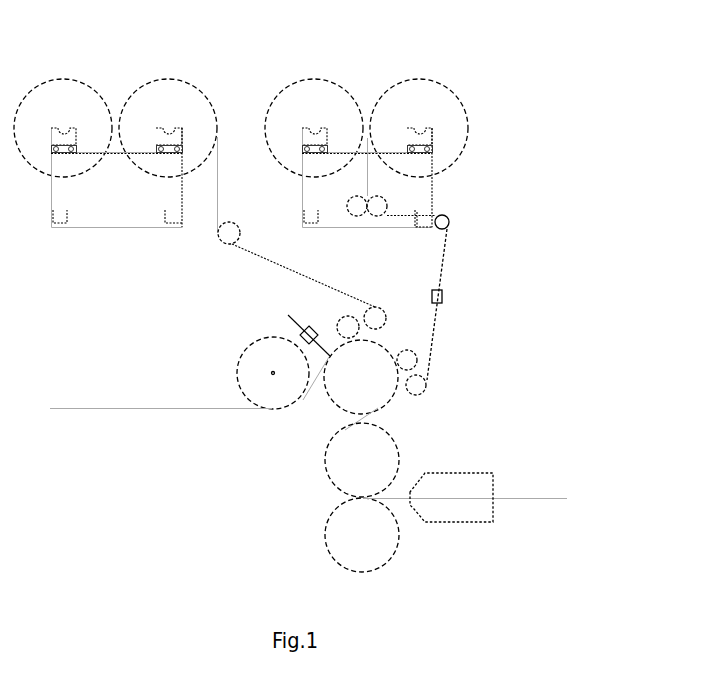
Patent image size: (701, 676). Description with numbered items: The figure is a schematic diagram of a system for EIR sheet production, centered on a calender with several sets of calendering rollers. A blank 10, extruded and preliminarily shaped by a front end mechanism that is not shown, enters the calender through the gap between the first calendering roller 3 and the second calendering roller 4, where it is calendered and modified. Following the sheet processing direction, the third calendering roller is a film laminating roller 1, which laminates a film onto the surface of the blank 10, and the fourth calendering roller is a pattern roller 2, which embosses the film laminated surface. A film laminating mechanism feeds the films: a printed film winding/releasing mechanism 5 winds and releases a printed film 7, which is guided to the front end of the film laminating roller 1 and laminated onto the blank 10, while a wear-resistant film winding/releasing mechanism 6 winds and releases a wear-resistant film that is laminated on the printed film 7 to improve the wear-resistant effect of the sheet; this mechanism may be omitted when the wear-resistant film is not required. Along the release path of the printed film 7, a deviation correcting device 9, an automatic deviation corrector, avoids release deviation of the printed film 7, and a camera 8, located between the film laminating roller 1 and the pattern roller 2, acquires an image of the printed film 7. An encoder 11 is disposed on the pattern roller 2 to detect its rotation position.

The film laminating roller 1 is at (373, 378).
The pattern roller 2 is at (263, 346).
The first calendering roller 3 is at (370, 552).
The second calendering roller 4 is at (343, 457).
The printed film winding/releasing mechanism 5 is at (370, 85).
The wear-resistant film winding/releasing mechanism 6 is at (120, 83).
The printed film 7 is at (445, 262).
The camera 8 is at (307, 328).
The deviation correcting device 9 is at (443, 298).
The blank 10 is at (527, 498).
The encoder 11 is at (273, 375).